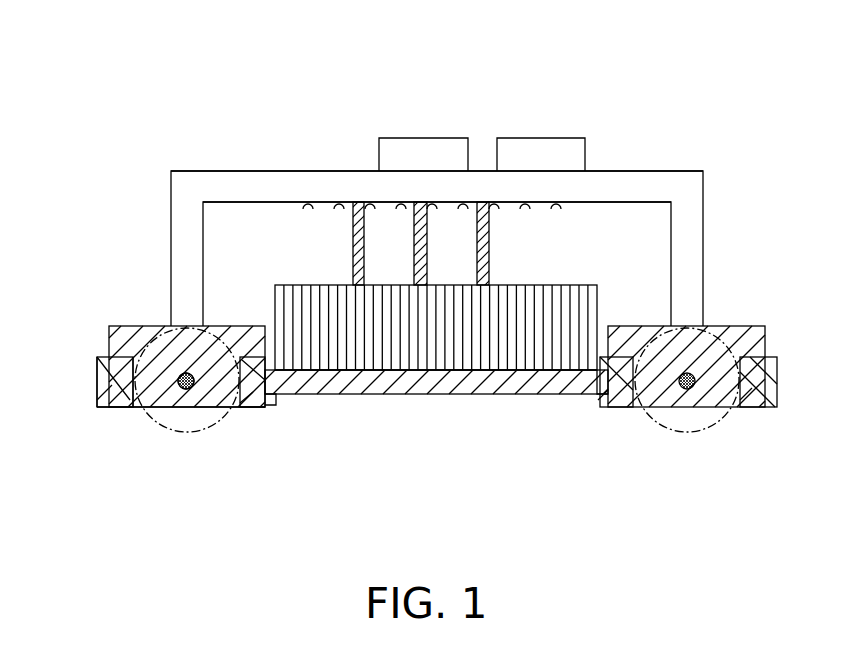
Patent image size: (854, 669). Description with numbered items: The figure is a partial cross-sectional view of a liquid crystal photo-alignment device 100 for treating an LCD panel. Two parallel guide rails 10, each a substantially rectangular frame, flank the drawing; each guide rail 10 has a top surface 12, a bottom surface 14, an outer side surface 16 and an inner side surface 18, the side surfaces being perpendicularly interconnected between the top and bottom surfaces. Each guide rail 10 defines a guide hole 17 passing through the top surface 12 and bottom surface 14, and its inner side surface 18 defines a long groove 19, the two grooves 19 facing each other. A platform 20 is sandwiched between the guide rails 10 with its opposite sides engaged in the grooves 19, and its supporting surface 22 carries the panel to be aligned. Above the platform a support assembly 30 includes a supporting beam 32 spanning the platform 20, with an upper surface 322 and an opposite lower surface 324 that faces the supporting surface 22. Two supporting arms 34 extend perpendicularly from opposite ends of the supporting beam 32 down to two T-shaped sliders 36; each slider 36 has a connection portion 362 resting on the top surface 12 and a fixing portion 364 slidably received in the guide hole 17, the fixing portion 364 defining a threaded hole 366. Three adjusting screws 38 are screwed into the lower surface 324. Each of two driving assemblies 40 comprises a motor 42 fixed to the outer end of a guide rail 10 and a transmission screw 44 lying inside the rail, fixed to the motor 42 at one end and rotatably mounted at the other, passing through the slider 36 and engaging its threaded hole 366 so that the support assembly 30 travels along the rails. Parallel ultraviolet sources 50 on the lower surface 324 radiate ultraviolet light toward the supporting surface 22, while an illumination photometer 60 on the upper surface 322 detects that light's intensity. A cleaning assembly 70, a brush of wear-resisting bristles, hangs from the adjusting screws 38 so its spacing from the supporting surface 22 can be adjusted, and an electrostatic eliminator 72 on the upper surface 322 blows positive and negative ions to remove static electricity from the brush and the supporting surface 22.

The liquid crystal photo-alignment device 100 is at (318, 62).
The guide rail 10 is at (97, 360).
The top surface 12 is at (107, 357).
The bottom surface 14 is at (115, 407).
The outer side surface 16 is at (95, 377).
The guide hole 17 is at (132, 395).
The inner side surface 18 is at (277, 405).
The groove 19 is at (270, 397).
The platform 20 is at (388, 383).
The supporting surface 22 is at (437, 380).
The support assembly 30 is at (98, 131).
The supporting beam 32 is at (268, 190).
The upper surface 322 is at (620, 170).
The lower surface 324 is at (615, 202).
The supporting arm 34 is at (183, 235).
The slider 36 is at (165, 253).
The connection portion 362 is at (127, 348).
The fixing portion 364 is at (157, 383).
The threaded hole 366 is at (195, 377).
The adjusting screw 38 is at (358, 247).
The driving assembly 40 is at (232, 485).
The motor 42 is at (167, 425).
The transmission screw 44 is at (193, 385).
The ultraviolet source 50 is at (525, 208).
The illumination photometer 60 is at (398, 148).
The cleaning assembly 70 is at (567, 322).
The electrostatic eliminator 72 is at (512, 148).